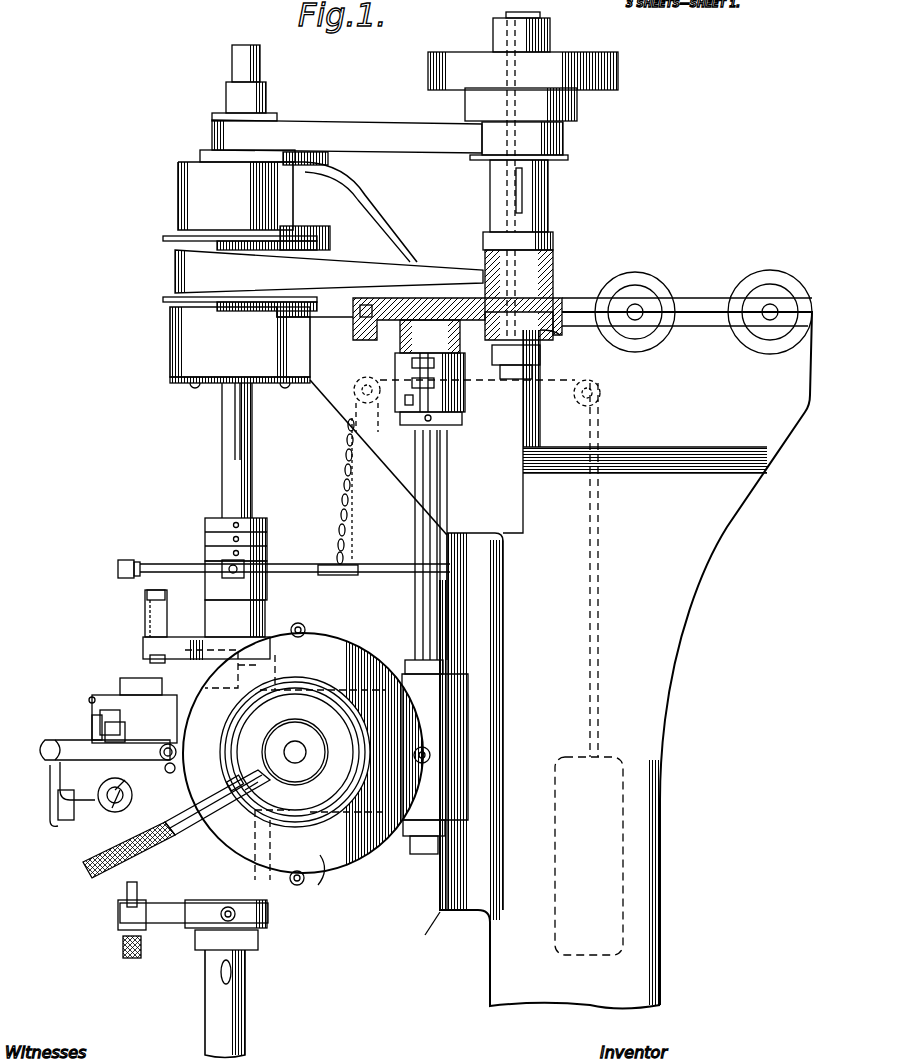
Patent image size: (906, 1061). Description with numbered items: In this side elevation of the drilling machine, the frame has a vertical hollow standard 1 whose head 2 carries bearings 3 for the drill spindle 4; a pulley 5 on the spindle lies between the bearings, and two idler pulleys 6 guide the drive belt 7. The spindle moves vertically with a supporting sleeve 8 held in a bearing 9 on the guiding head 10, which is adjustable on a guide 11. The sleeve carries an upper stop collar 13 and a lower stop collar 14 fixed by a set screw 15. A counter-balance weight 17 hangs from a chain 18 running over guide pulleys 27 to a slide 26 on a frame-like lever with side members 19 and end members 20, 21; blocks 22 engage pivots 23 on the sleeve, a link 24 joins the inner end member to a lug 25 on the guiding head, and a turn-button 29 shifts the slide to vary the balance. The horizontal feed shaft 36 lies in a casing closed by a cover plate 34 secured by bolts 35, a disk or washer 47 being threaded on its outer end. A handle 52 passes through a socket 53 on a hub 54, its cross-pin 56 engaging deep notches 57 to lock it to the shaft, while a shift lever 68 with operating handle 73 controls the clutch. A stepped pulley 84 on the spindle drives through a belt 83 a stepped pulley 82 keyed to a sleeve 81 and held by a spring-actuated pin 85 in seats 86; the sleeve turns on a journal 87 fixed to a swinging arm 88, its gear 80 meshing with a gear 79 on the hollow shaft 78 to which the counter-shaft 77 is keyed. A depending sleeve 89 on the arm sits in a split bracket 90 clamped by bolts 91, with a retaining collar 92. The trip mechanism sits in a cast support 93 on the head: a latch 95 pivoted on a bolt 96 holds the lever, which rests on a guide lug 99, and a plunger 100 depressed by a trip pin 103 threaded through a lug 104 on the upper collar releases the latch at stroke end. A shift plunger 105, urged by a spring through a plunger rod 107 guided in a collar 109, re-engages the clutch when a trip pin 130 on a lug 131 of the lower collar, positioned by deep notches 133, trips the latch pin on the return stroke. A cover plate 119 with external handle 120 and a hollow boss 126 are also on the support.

The standard 1 is at (660, 862).
The head 2 is at (333, 395).
The bearings 3 is at (178, 190).
The drill spindle 4 is at (222, 432).
The pulley 5 is at (170, 245).
The idler pulleys 6 is at (640, 282).
The drive belt 7 is at (410, 270).
The supporting sleeve 8 is at (205, 605).
The bearing 9 is at (192, 835).
The guiding head 10 is at (365, 855).
The guide 11 is at (425, 928).
The upper stop collar 13 is at (205, 645).
The lower stop collar 14 is at (200, 925).
The set screw 15 is at (262, 926).
The weight 17 is at (622, 880).
The chain 18 is at (600, 605).
The side members 19 is at (290, 565).
The inner end member 20 is at (450, 575).
The outer end member 21 is at (118, 572).
The blocks 22 is at (267, 580).
The pivots 23 is at (230, 578).
The link 24 is at (446, 607).
The lug 25 is at (440, 650).
The slide or carriage 26 is at (345, 575).
The guide pulleys 27 is at (600, 400).
The turn-button 29 is at (130, 560).
The cover plate 34 is at (318, 885).
The bolts 35 is at (302, 637).
The feed shaft 36 is at (300, 748).
The disk or washer 47 is at (278, 738).
The handle 52 is at (100, 858).
The socket or sleeve 53 is at (245, 760).
The hub 54 is at (300, 694).
The cross-pin 56 is at (255, 790).
The deep notches 57 is at (228, 785).
The shift lever 68 is at (125, 738).
The operating handle 73 is at (45, 760).
The shaft 77 is at (415, 615).
The hollow shaft 78 is at (438, 475).
The gear 79 is at (362, 340).
The gear 80 is at (562, 330).
The sleeve 81 is at (548, 198).
The stepped pulley 82 is at (576, 100).
The belt 83 is at (350, 128).
The stepped pulley 84 is at (262, 102).
The spring-actuated pin 85 is at (578, 118).
The seats 86 is at (563, 145).
The vertical shaft or journal 87 is at (540, 280).
The swinging arm or bracket 88 is at (478, 345).
The depending sleeve 89 is at (470, 380).
The supporting bracket 90 is at (462, 425).
The bolts 91 is at (412, 362).
The collar 92 is at (408, 412).
The support 93 is at (100, 698).
The latch 95 is at (120, 712).
The bolt 96 is at (92, 722).
The guide lug 99 is at (92, 790).
The plunger 100 is at (238, 680).
The trip pin 103 is at (150, 660).
The lug 104 is at (145, 612).
The shift plunger 105 is at (150, 740).
The plunger rod 107 is at (128, 805).
The collar 109 is at (132, 795).
The cover plate 119 is at (90, 700).
The external handle 120 is at (55, 822).
The hollow boss 126 is at (130, 678).
The trip pin 130 is at (137, 890).
The lug 131 is at (118, 925).
The deep notches 133 is at (118, 912).